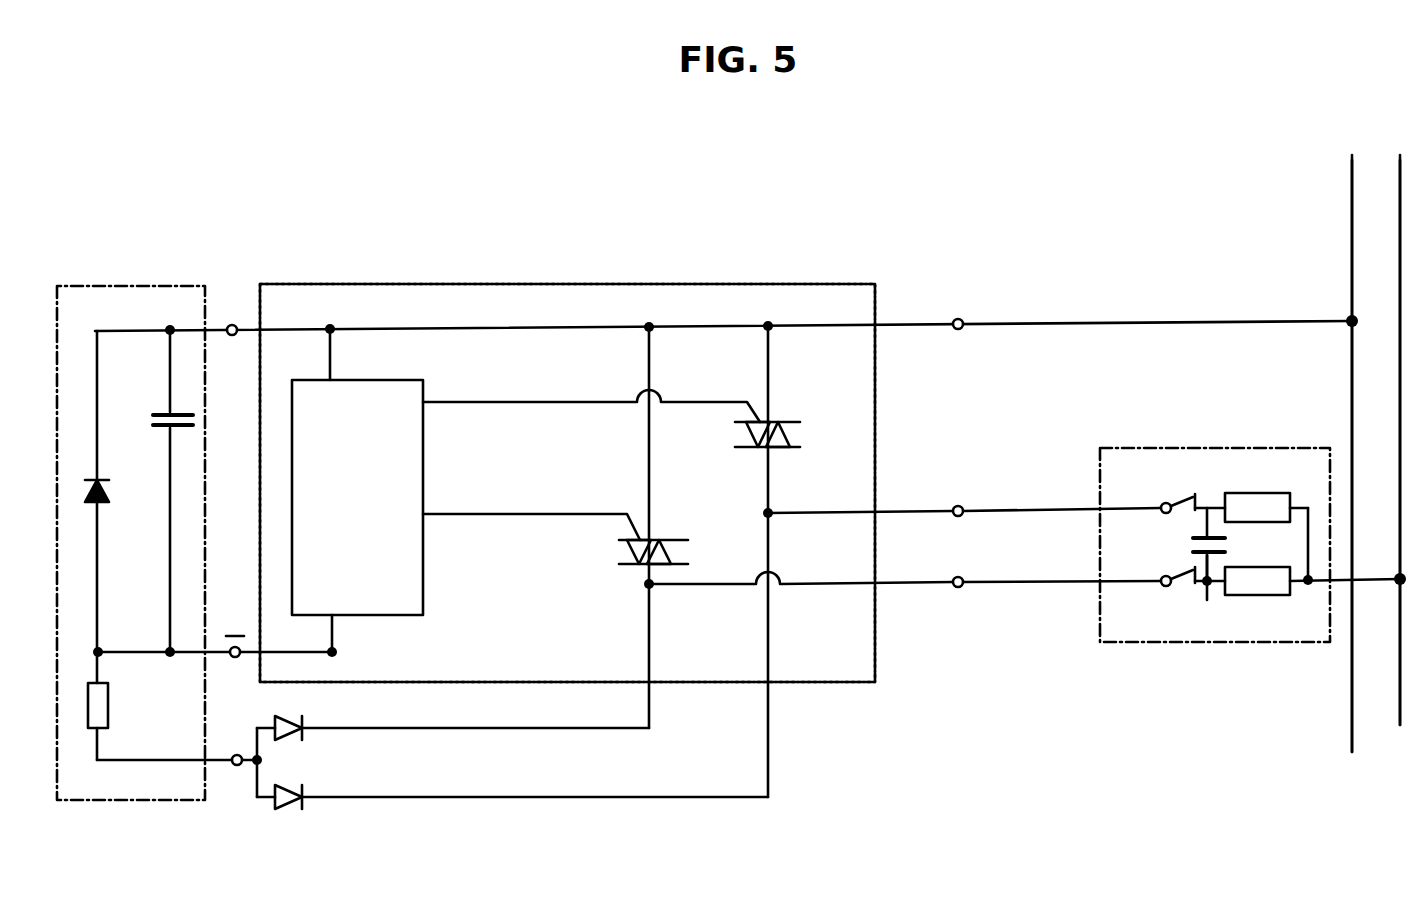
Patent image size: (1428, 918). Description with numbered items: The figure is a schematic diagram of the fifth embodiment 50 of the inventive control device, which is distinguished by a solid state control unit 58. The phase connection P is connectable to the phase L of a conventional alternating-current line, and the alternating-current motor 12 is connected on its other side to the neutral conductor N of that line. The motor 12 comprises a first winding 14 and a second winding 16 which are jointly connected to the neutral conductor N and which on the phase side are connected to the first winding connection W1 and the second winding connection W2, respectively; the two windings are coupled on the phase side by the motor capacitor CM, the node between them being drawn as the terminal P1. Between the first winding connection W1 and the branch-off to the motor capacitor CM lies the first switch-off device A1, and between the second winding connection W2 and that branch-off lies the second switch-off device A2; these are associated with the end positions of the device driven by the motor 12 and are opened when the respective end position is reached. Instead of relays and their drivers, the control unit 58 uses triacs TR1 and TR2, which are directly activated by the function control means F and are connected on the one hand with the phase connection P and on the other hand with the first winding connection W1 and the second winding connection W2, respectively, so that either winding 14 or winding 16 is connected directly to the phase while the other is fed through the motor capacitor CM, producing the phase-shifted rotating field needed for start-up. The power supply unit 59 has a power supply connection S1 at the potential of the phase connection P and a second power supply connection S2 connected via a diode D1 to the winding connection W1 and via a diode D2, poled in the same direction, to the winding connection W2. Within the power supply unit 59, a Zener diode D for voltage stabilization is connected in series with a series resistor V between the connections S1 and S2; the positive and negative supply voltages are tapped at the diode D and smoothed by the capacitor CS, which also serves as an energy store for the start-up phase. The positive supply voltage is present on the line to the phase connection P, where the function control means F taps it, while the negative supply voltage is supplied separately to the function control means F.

The power supply unit 59 is at (112, 270).
The fifth embodiment 50 is at (492, 248).
The control unit 58 is at (556, 265).
The alternating-current motor 12 is at (1214, 436).
The first winding 14 is at (1268, 588).
The second winding 16 is at (1260, 500).
The motor capacitor CM is at (1190, 546).
The first switch-off device A1 is at (1190, 570).
The second switch-off device A2 is at (1186, 500).
The motor common terminal P1 is at (1208, 590).
The phase connection P is at (958, 318).
The first winding connection W1 is at (958, 588).
The second winding connection W2 is at (958, 505).
The phase L is at (1351, 440).
The neutral conductor N is at (1399, 427).
The power supply connection S1 is at (233, 336).
The power supply connection S2 is at (238, 766).
The capacitor CS is at (154, 415).
The Zener diode D is at (107, 484).
The series resistor V is at (110, 703).
The function control means F is at (357, 497).
The diode D1 is at (290, 720).
The diode D2 is at (292, 806).
The triac TR1 is at (660, 538).
The triac TR2 is at (774, 420).